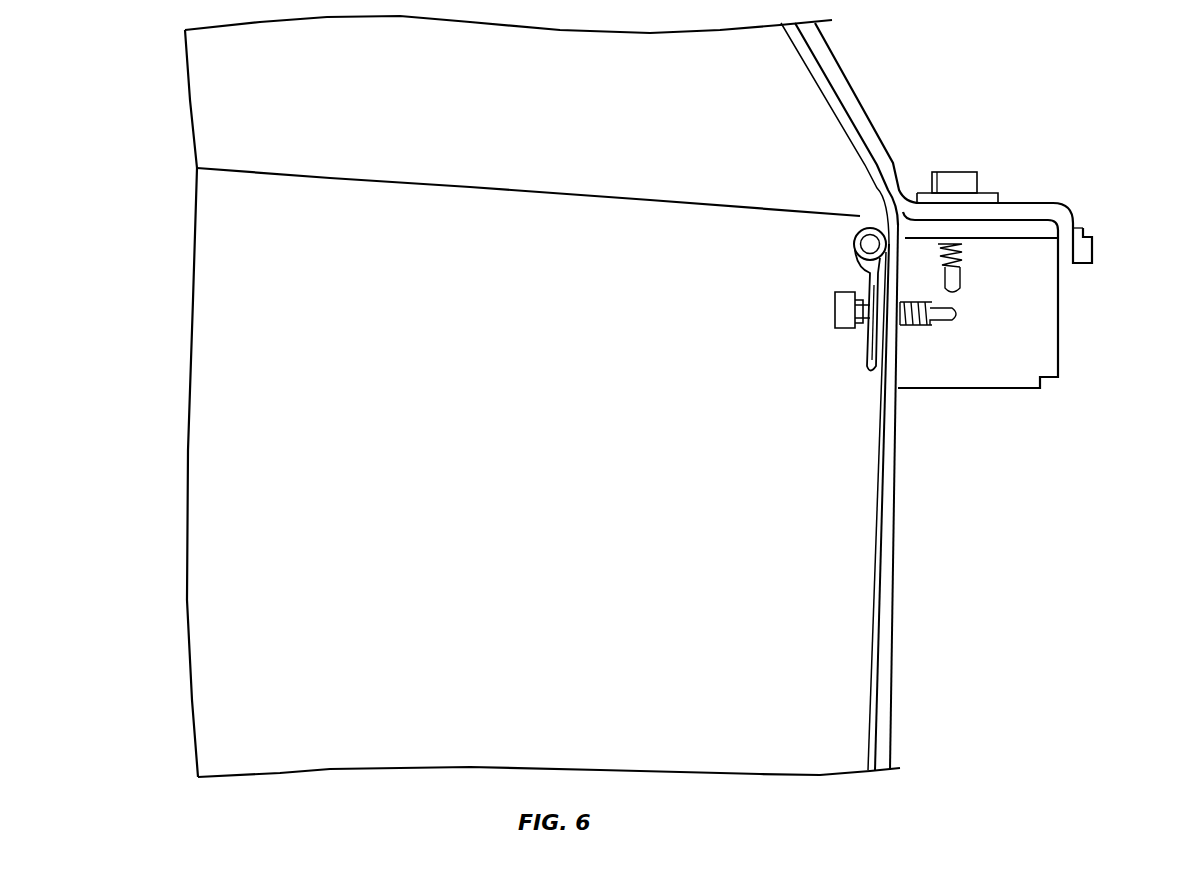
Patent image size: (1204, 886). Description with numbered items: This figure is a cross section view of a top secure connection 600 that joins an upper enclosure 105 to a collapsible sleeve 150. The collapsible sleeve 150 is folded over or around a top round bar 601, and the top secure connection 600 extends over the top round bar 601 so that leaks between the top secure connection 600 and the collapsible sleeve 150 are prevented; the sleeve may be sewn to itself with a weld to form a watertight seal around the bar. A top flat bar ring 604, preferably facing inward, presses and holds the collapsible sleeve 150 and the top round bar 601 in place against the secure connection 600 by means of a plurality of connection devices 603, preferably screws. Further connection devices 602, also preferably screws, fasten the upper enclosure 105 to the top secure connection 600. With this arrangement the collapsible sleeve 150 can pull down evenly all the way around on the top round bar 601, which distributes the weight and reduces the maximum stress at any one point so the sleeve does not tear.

The upper enclosure 105 is at (830, 52).
The collapsible sleeve 150 is at (890, 598).
The top secure connection 600 is at (1115, 172).
The top round bar 601 is at (872, 242).
The connection devices 602 is at (953, 185).
The connection devices 603 is at (943, 323).
The top flat bar ring 604 is at (863, 345).